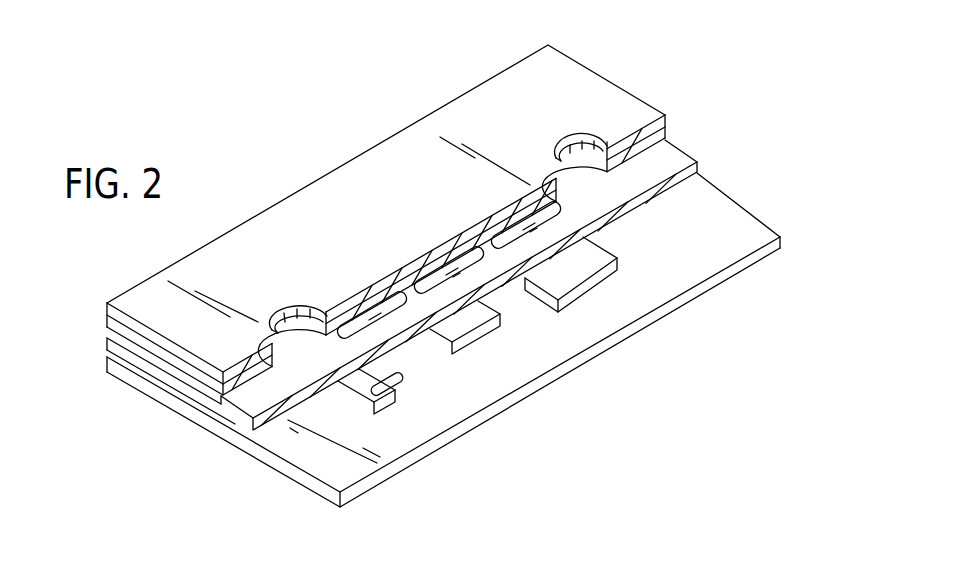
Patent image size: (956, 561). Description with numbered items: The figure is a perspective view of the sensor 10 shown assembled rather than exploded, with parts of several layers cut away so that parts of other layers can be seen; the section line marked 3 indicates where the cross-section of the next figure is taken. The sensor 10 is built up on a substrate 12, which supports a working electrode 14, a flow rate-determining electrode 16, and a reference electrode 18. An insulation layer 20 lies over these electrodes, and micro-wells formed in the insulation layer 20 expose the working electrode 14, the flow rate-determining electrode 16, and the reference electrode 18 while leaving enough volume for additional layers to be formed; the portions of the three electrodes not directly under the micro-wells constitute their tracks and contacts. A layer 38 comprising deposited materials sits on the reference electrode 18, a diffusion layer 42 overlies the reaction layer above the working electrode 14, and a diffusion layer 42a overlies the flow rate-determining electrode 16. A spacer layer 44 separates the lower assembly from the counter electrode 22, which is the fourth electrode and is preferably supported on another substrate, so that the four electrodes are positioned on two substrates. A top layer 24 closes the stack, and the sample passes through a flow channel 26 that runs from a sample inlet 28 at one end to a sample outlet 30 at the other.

The sensor 10 is at (792, 174).
The substrate 12 is at (520, 363).
The working electrode 14 is at (408, 362).
The flow rate-determining electrode 16 is at (490, 305).
The reference electrode 18 is at (603, 252).
The insulation layer 20 is at (459, 285).
The counter electrode 22 is at (380, 300).
The top layer 24 is at (572, 78).
The flow channel 26 is at (268, 328).
The sample inlet 28 is at (290, 310).
The sample outlet 30 is at (577, 140).
The layer 38 is at (562, 240).
The diffusion layer 42 is at (385, 388).
The diffusion layer 42a is at (425, 262).
The spacer layer 44 is at (212, 386).
The section line 3- 3 is at (715, 112).